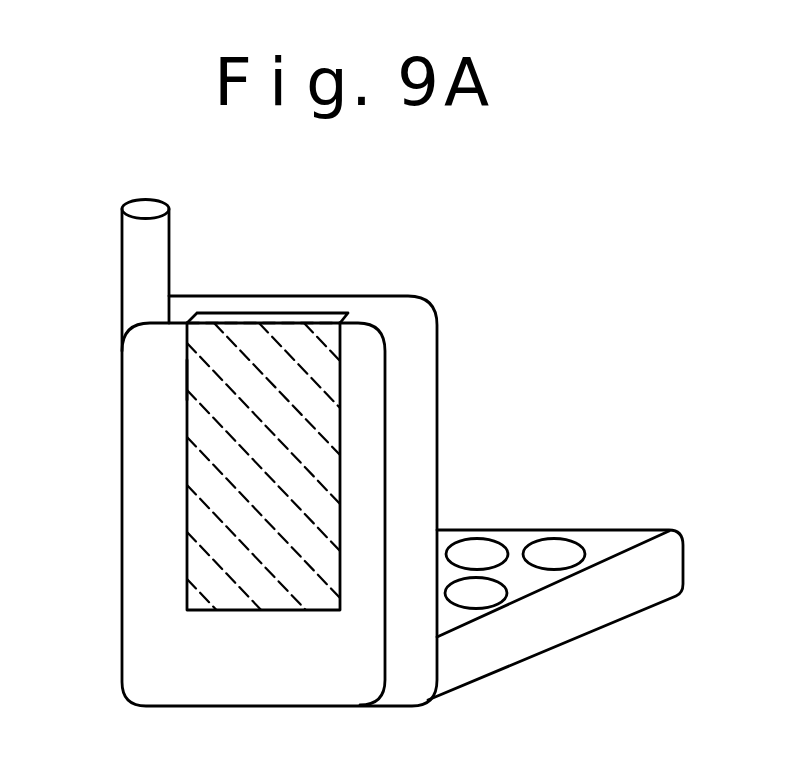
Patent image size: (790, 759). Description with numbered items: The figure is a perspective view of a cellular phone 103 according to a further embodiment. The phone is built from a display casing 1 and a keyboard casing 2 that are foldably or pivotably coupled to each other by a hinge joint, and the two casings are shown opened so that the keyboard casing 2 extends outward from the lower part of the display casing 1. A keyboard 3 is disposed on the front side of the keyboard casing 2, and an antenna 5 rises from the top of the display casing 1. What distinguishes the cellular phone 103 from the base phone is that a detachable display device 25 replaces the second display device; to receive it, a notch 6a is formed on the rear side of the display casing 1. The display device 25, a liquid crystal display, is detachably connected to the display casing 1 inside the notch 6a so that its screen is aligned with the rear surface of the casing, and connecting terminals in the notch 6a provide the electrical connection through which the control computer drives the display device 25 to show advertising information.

The display casing 1 is at (423, 392).
The keyboard casing 2 is at (602, 542).
The keyboard 3 is at (519, 574).
The antenna 5 is at (145, 210).
The notch 6a is at (257, 308).
The detachable display device 25 is at (186, 380).
The cellular phone 103 is at (485, 218).